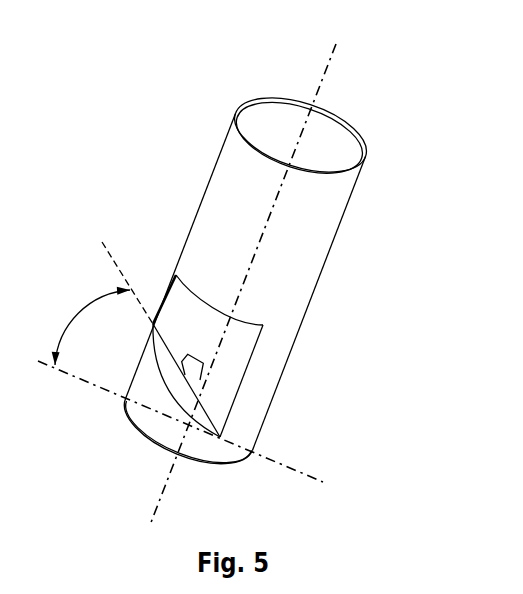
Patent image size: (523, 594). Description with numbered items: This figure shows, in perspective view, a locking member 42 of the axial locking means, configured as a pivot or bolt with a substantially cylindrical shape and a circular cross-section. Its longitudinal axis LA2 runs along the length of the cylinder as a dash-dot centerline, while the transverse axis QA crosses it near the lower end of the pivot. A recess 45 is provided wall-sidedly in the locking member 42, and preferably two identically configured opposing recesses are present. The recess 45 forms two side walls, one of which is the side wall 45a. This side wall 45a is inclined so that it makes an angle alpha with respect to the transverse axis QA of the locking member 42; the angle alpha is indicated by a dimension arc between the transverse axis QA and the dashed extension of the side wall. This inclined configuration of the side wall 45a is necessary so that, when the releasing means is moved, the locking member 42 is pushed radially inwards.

The locking member 42 is at (384, 111).
The recess 45 is at (184, 304).
The side wall 45a is at (183, 390).
The longitudinal axis LA2 is at (243, 277).
The transverse axis QA is at (200, 424).
The angle alpha is at (102, 303).